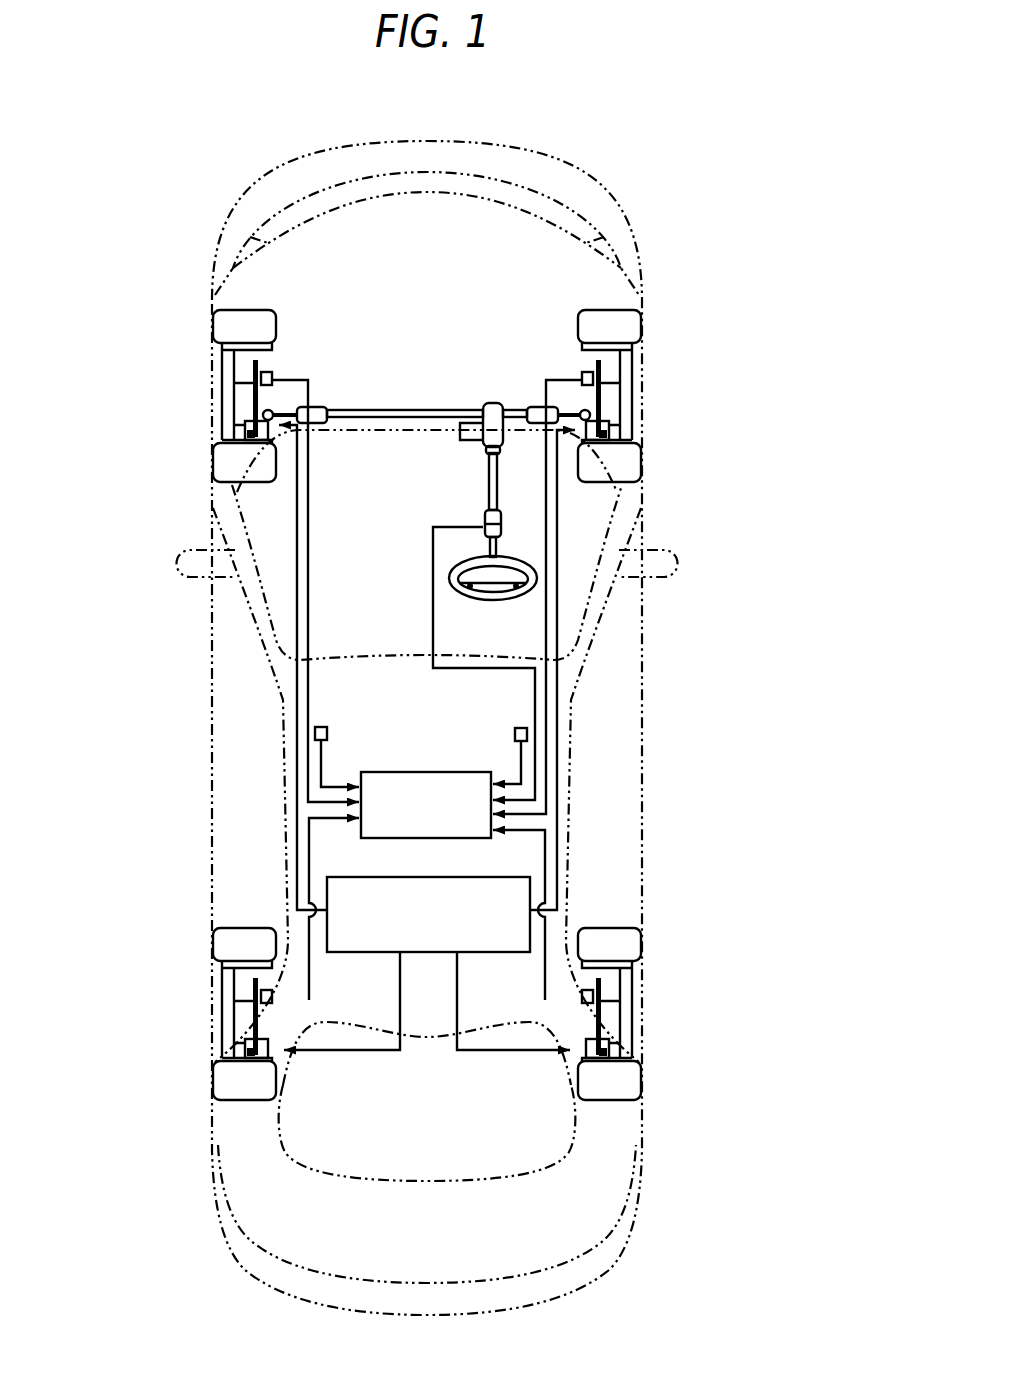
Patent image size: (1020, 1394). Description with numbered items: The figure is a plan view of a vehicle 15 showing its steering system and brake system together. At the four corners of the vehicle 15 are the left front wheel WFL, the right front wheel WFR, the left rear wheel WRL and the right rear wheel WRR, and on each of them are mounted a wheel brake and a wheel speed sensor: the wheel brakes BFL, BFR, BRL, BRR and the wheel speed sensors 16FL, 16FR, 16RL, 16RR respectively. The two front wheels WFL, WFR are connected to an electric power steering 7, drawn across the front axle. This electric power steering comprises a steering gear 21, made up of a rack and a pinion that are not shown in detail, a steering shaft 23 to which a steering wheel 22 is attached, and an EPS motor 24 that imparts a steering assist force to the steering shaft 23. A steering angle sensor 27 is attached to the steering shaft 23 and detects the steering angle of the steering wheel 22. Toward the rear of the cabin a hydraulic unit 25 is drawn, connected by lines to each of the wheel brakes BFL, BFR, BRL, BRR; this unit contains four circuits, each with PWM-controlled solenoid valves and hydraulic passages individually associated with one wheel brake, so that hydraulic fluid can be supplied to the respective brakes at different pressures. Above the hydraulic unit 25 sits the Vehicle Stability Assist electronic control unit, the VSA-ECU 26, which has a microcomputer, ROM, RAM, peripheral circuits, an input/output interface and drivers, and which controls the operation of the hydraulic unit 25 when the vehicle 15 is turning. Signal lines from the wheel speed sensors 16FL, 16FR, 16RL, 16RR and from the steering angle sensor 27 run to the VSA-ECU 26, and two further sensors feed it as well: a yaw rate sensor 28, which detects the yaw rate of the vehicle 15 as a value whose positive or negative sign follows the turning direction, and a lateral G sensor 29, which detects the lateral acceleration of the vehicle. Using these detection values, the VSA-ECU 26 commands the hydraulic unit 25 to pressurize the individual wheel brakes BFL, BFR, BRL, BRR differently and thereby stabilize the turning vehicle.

The vehicle 15 is at (644, 250).
The left front wheel WFL is at (228, 330).
The right front wheel WFR is at (627, 332).
The left rear wheel WRL is at (228, 1083).
The right rear wheel WRR is at (626, 1083).
The wheel brake BFL is at (245, 428).
The wheel brake BFR is at (609, 432).
The wheel brake BRL is at (245, 1050).
The wheel brake BRR is at (609, 1048).
The wheel speed sensor 16FL is at (274, 378).
The wheel speed sensor 16FR is at (582, 378).
The wheel speed sensor 16RL is at (272, 998).
The wheel speed sensor 16RR is at (582, 998).
The steering device 7 is at (502, 399).
The steering gear 21 is at (452, 409).
The steering wheel 22 is at (489, 599).
The steering shaft 23 is at (489, 474).
The EPS motor 24 is at (468, 436).
The steering angle sensor 27 is at (485, 517).
The yaw rate sensor 28 is at (519, 728).
The lateral G sensor 29 is at (324, 727).
The VSA-ECU 26 is at (426, 780).
The hydraulic unit 25 is at (467, 876).